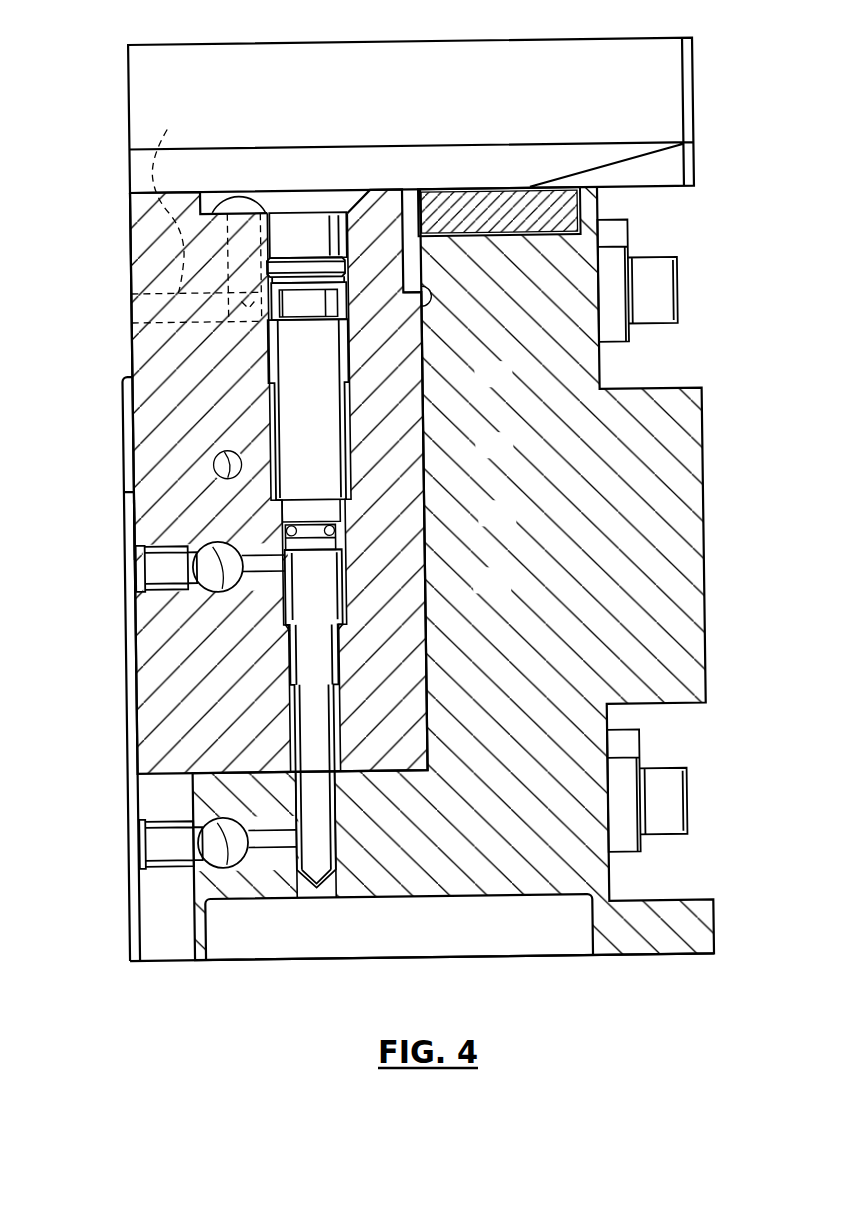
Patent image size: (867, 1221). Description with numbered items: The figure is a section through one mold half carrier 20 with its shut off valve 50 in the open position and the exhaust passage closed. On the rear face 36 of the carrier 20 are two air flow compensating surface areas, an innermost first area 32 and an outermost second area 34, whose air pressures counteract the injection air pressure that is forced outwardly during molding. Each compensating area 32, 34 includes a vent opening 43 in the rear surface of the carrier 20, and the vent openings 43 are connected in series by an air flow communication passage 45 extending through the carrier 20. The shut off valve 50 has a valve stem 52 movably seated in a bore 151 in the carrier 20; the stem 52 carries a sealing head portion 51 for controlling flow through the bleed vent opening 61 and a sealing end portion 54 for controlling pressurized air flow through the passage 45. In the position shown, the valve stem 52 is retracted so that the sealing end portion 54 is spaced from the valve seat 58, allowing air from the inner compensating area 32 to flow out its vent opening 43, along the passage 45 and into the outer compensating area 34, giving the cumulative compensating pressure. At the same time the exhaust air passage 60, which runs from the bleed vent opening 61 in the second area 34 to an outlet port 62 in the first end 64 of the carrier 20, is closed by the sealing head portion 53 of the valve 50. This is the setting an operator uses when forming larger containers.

The mold half carrier 20 is at (677, 652).
The first air flow compensating surface area 32 is at (128, 533).
The second air flow compensating surface area 34 is at (130, 338).
The rear face 36 is at (125, 433).
The vent opening 43 is at (135, 575).
The air flow communication passage 45 is at (318, 580).
The shut off valve 50 is at (281, 473).
The sealing head portion 51 is at (322, 198).
The valve stem 52 is at (317, 397).
The sealing head portion 53 is at (346, 188).
The sealing end portion 54 is at (331, 532).
The valve seat 58 is at (291, 641).
The exhaust air passage 60 is at (178, 198).
The bleed vent opening 61 is at (128, 308).
The outlet port 62 is at (303, 199).
The first end 64 is at (462, 200).
The bore 151 is at (333, 298).